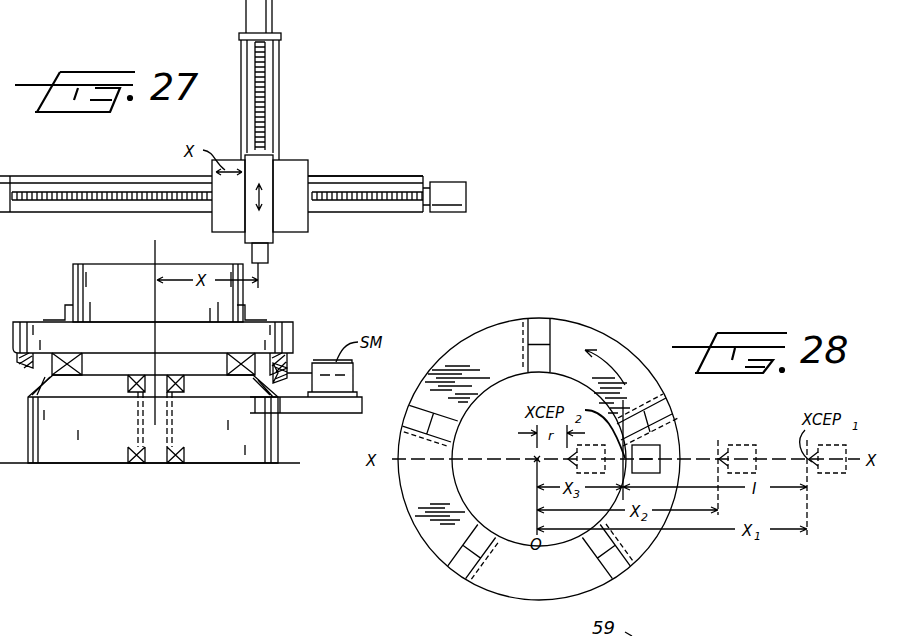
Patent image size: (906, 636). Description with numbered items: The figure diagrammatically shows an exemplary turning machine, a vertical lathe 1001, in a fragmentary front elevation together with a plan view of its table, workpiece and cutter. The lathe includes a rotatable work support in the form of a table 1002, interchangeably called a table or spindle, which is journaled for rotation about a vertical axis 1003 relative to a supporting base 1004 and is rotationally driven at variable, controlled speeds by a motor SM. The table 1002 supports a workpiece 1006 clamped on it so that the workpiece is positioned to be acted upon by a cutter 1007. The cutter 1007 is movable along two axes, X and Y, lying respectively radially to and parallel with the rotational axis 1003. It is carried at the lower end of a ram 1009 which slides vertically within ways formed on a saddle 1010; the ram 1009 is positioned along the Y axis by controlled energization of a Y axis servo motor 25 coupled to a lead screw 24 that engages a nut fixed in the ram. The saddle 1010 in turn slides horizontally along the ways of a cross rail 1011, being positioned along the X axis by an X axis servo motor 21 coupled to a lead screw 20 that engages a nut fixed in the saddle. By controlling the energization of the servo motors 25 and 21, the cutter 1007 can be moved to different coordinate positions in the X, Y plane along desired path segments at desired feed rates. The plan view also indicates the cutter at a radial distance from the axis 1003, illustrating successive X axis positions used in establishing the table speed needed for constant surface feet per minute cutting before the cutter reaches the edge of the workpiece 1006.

In FIG. 27, the Y axis servo motor 25 is at (278, 16).
In FIG. 27, the lead screw 24 is at (265, 80).
In FIG. 27, the saddle 1010 is at (300, 165).
In FIG. 27, the cross rail 1011 is at (365, 178).
In FIG. 27, the X axis servo motor 21 is at (459, 187).
In FIG. 27, the lead screw 20 is at (383, 201).
In FIG. 27, the ram 1009 is at (277, 218).
In FIG. 28, the ram 1009 is at (652, 449).
In FIG. 27, the cutter 1007 is at (252, 262).
In FIG. 28, the cutter 1007 is at (628, 425).
In FIG. 27, the vertical axis 1003 is at (155, 250).
In FIG. 28, the vertical axis 1003 is at (537, 460).
In FIG. 27, the workpiece 1006 is at (80, 290).
In FIG. 28, the workpiece 1006 is at (455, 497).
In FIG. 27, the vertical lathe 1001 is at (303, 299).
In FIG. 27, the table 1002 is at (290, 325).
In FIG. 28, the table 1002 is at (420, 538).
In FIG. 27, the supporting base 1004 is at (108, 433).